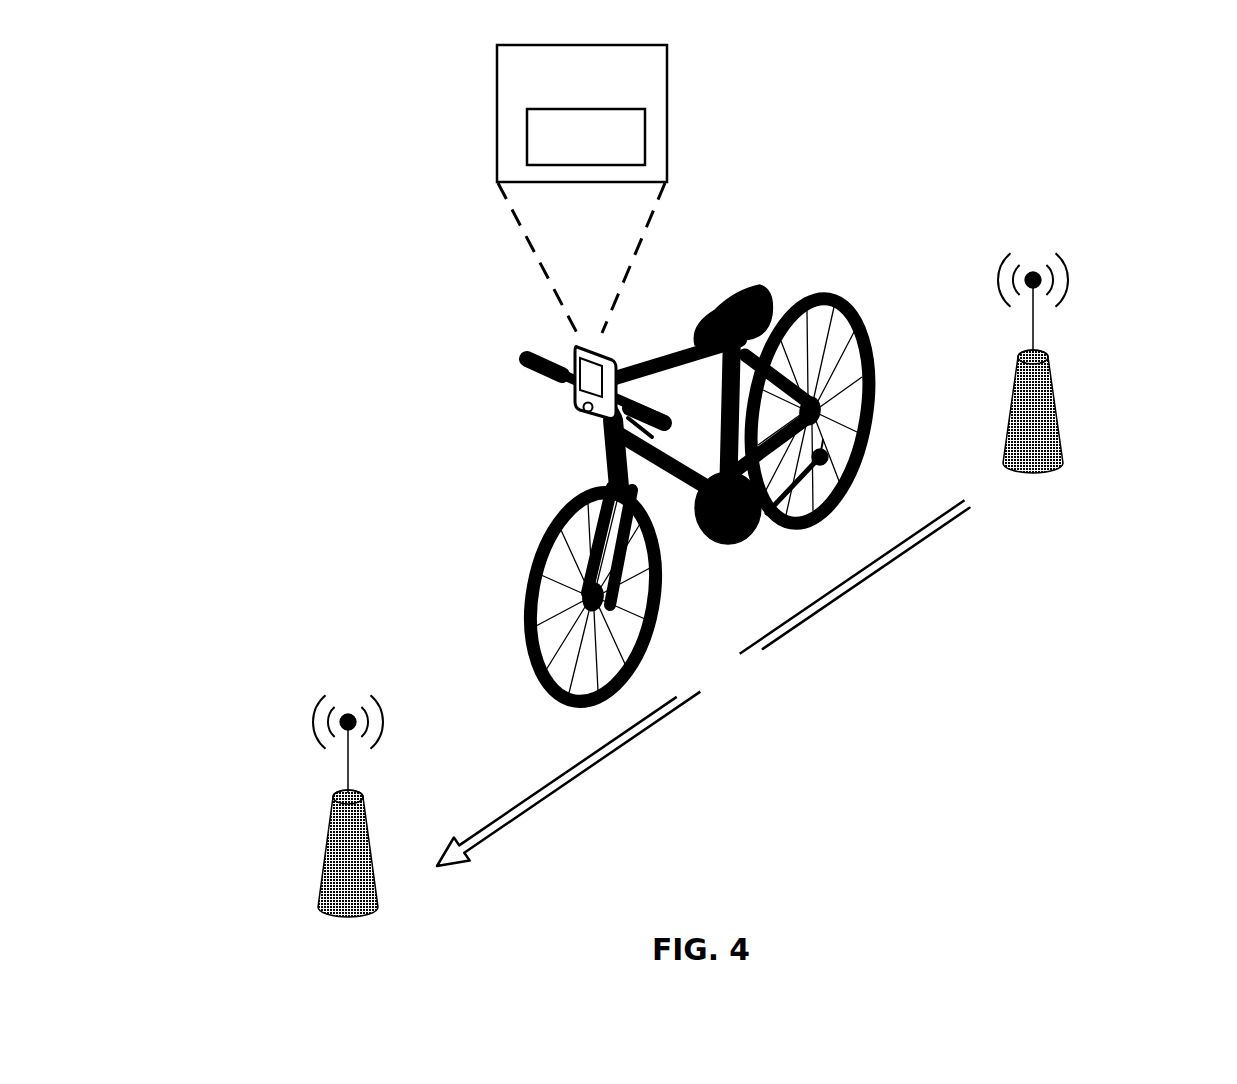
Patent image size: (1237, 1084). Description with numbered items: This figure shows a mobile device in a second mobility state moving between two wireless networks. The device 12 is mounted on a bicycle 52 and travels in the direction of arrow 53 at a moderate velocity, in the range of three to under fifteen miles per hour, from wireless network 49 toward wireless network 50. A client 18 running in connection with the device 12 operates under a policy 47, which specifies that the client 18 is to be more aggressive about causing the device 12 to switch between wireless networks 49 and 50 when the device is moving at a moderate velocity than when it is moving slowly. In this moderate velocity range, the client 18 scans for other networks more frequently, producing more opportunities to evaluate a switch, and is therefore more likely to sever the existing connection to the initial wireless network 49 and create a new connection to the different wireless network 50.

The client 18 is at (500, 60).
The policy 47 is at (527, 138).
The device 12 is at (572, 399).
The bicycle 52 is at (840, 297).
The wireless network 49 is at (1053, 420).
The wireless network 50 is at (323, 863).
The arrow 53 is at (884, 578).